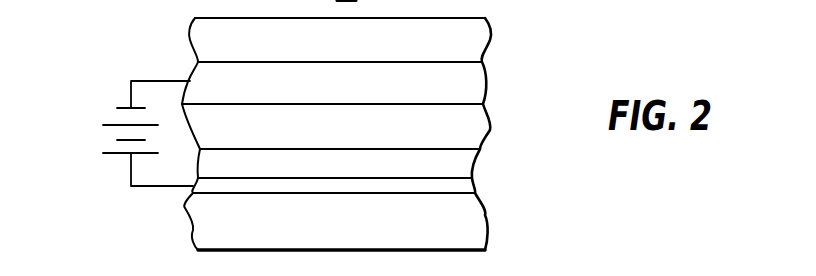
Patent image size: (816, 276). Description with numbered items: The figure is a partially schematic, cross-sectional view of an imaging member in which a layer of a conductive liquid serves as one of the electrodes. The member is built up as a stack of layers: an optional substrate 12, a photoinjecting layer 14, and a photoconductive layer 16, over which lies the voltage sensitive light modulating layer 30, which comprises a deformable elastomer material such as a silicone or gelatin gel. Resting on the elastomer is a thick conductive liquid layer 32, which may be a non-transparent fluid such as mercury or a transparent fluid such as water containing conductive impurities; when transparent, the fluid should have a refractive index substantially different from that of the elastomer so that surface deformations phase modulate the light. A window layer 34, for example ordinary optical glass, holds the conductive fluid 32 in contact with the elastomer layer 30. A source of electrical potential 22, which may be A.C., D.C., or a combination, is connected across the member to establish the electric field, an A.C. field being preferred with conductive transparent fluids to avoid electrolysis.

The substrate 12 is at (482, 228).
The photoinjecting layer 14 is at (468, 188).
The photoconductive layer 16 is at (468, 173).
The source of electrical potential 22 is at (103, 125).
The voltage sensitive light modulating layer 30 is at (478, 131).
The conductive liquid layer 32 is at (472, 92).
The window layer 34 is at (475, 39).